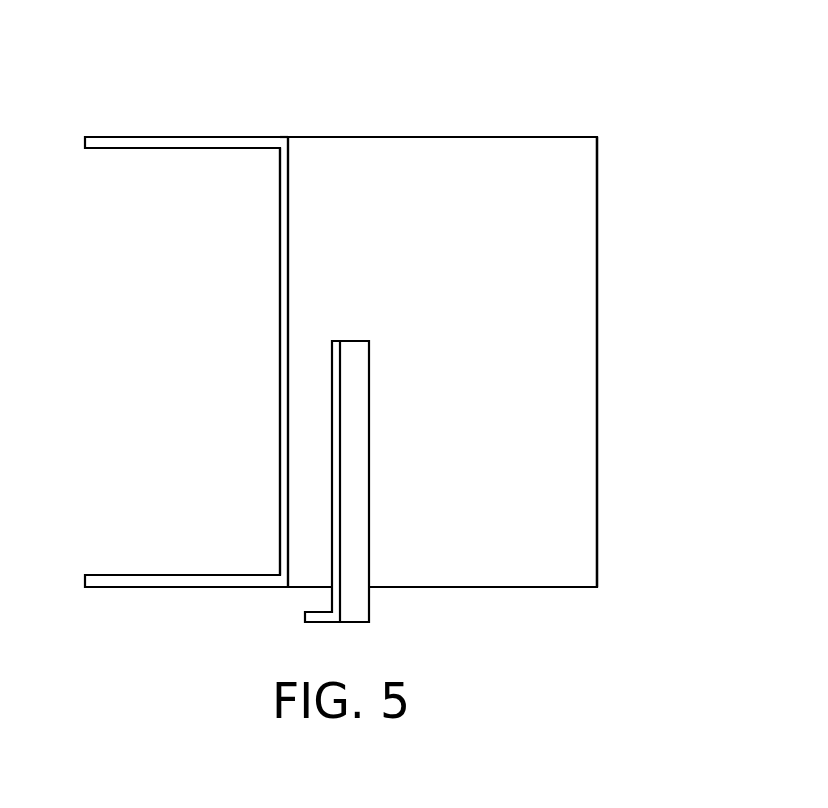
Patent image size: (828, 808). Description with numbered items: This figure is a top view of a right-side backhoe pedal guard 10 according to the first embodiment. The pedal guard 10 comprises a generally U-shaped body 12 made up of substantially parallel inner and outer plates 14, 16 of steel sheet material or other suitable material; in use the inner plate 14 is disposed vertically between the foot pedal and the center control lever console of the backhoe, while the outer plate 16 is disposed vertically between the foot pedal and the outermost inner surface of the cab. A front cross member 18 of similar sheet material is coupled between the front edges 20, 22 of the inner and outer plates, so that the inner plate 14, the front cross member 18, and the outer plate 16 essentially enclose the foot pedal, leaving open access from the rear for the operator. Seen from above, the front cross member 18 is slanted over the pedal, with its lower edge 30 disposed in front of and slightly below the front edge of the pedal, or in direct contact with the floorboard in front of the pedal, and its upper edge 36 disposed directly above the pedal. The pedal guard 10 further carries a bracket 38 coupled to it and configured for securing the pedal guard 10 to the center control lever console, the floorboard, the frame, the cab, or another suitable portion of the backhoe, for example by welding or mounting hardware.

The pedal guard 10 is at (135, 72).
The U-shaped body 12 is at (440, 168).
The inner plate 14 is at (195, 590).
The outer plate 16 is at (272, 135).
The front cross member 18 is at (536, 308).
The front edge of inner plate 20 is at (500, 590).
The front edge of outer plate 22 is at (368, 145).
The lower edge 30 is at (598, 375).
The upper edge 36 is at (285, 398).
The bracket 38 is at (355, 594).